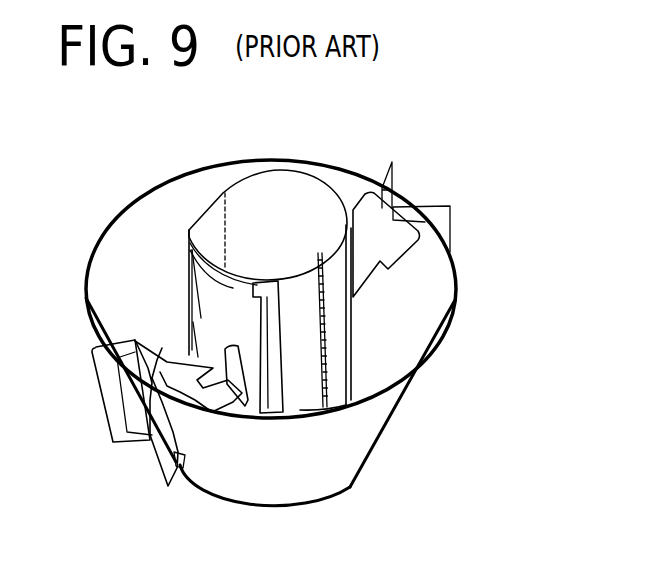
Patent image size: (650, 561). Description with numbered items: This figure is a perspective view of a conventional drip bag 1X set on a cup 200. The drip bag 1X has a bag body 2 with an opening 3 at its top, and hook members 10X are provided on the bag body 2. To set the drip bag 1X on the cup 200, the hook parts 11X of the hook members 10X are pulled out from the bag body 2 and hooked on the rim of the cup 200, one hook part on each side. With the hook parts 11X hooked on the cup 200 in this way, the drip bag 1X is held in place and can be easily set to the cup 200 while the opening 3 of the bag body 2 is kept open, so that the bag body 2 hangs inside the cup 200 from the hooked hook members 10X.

The drip bag 1X is at (115, 162).
The hook members 10X is at (115, 292).
The hook parts 11X is at (110, 402).
The bag body 2 is at (237, 188).
The opening 3 is at (272, 196).
The cup 200 is at (350, 460).